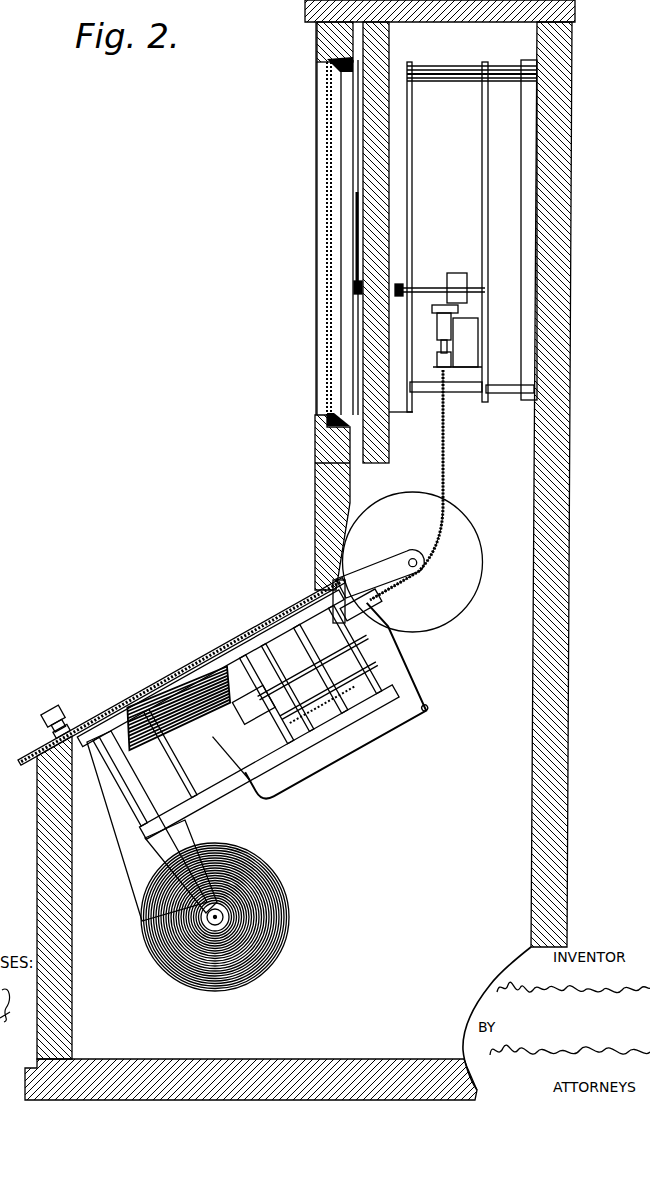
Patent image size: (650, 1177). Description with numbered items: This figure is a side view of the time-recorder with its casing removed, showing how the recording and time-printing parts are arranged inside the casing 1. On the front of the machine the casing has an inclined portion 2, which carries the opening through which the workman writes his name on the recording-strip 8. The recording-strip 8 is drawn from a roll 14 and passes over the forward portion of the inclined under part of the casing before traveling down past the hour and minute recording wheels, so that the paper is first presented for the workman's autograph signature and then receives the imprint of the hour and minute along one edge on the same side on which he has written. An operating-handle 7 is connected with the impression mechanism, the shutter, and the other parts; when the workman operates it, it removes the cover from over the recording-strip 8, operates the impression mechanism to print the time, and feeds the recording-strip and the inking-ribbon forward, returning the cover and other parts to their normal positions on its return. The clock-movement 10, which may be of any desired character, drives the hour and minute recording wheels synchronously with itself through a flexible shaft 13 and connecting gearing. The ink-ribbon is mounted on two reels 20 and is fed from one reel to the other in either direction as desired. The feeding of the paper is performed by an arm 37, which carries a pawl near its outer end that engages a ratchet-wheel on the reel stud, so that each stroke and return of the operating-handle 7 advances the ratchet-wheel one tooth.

The casing 1 is at (563, 492).
The inclined portion of the casing 2 is at (223, 648).
The operating-handle 7 is at (88, 712).
The recording-strip 8 is at (373, 750).
The clock-movement 10 is at (323, 239).
The flexible shaft 13 is at (447, 441).
The roll 14 is at (277, 892).
The reels 20 is at (166, 737).
The arm 37 is at (413, 562).